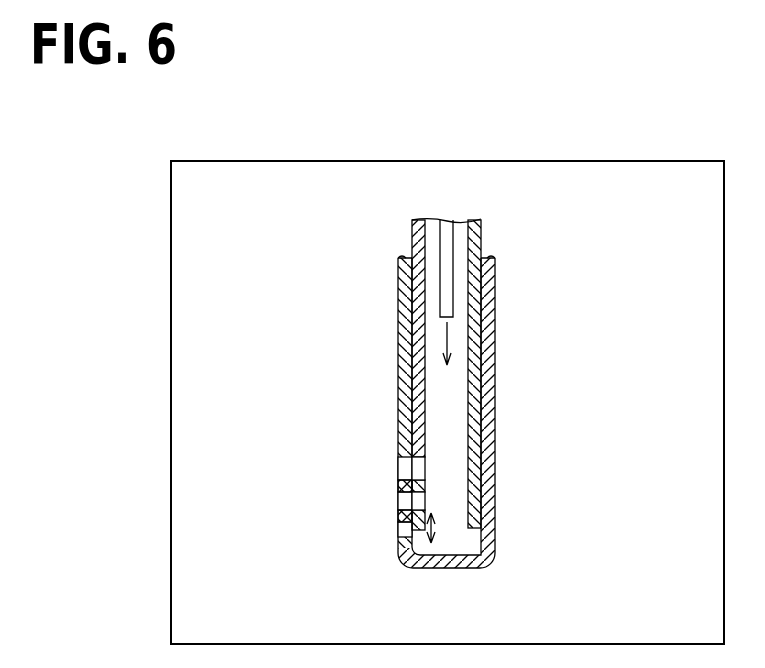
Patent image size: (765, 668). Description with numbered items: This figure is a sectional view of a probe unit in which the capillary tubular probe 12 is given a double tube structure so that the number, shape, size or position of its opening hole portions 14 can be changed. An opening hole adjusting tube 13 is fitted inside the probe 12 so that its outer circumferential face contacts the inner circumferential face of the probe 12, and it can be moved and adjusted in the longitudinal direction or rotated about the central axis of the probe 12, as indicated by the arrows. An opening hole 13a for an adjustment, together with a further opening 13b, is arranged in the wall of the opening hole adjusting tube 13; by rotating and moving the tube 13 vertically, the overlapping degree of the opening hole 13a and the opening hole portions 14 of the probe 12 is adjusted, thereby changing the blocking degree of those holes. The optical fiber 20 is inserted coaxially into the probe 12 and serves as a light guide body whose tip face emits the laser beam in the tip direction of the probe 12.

The probe 12 is at (406, 380).
The opening hole adjusting tube 13 is at (412, 237).
The opening hole for an adjustment 13a is at (423, 466).
The second opening 13b is at (423, 508).
The opening hole portion 14 is at (405, 468).
The optical fiber 20 is at (446, 242).